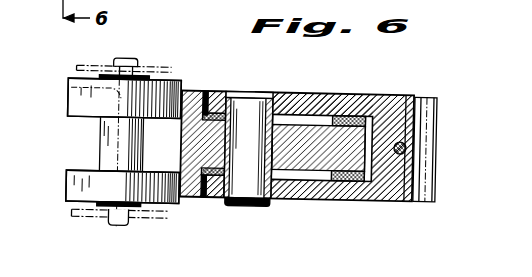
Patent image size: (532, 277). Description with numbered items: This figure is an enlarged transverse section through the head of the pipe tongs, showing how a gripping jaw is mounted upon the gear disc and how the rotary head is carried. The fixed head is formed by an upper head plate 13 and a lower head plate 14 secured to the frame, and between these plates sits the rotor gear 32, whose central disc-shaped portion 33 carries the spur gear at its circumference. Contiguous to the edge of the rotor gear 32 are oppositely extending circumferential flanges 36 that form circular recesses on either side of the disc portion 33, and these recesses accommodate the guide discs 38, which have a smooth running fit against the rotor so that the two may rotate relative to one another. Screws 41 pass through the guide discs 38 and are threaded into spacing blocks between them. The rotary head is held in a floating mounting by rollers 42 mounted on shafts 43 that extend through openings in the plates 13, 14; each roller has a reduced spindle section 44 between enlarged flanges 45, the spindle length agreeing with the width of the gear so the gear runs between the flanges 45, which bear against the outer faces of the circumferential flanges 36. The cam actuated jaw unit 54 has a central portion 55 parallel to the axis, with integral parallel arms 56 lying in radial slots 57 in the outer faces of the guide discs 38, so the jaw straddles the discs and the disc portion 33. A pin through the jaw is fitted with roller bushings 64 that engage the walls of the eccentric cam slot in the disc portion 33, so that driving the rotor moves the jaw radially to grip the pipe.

The upper head plate 13 is at (143, 64).
The lower head plate 14 is at (163, 219).
The rotor gear 32 is at (188, 132).
The central disc-shaped portion 33 is at (307, 153).
The circumferential flanges 36 is at (203, 90).
The guide discs 38 is at (365, 115).
The screws 41 is at (7, 50).
The rollers 42 is at (80, 118).
The shafts 43 is at (67, 91).
The spindle section 44 is at (100, 145).
The flanges 45 is at (66, 88).
The cam actuated jaw unit 54 is at (325, 91).
The central portion 55 is at (393, 175).
The parallel arms 56 is at (290, 97).
The radial slots 57 is at (10, 10).
The roller bushings 64 is at (285, 159).